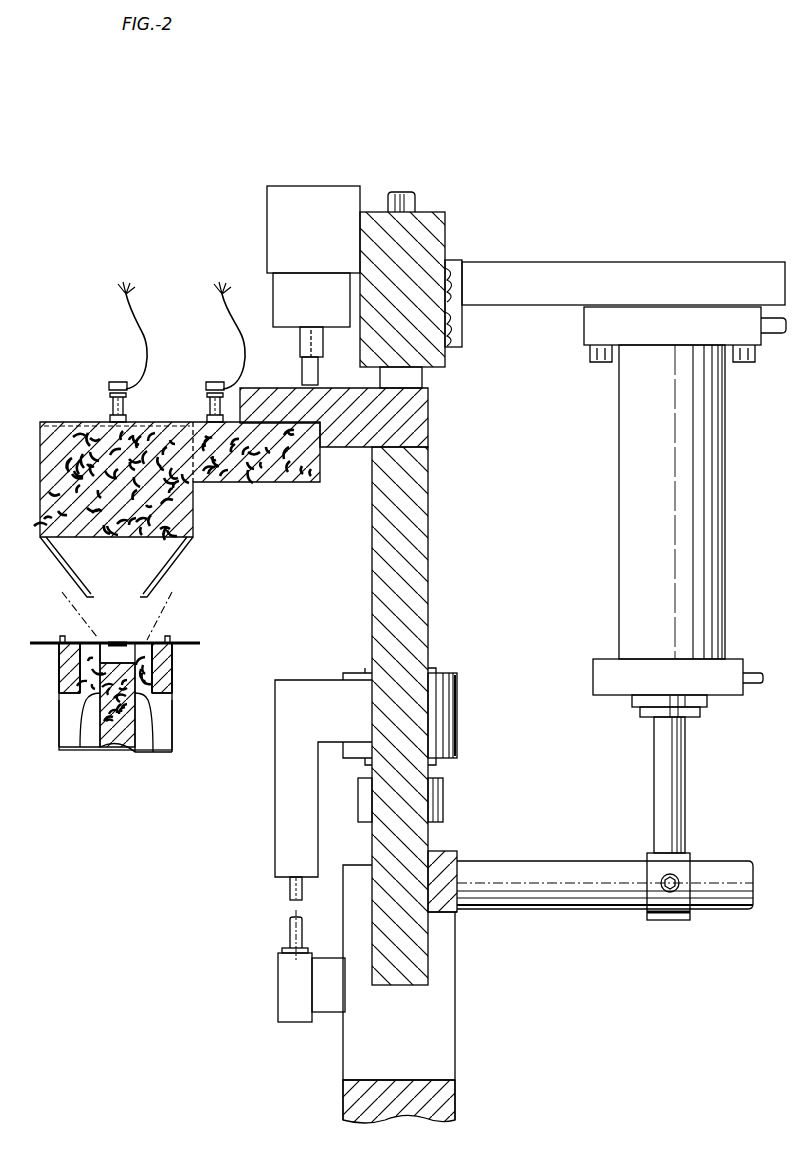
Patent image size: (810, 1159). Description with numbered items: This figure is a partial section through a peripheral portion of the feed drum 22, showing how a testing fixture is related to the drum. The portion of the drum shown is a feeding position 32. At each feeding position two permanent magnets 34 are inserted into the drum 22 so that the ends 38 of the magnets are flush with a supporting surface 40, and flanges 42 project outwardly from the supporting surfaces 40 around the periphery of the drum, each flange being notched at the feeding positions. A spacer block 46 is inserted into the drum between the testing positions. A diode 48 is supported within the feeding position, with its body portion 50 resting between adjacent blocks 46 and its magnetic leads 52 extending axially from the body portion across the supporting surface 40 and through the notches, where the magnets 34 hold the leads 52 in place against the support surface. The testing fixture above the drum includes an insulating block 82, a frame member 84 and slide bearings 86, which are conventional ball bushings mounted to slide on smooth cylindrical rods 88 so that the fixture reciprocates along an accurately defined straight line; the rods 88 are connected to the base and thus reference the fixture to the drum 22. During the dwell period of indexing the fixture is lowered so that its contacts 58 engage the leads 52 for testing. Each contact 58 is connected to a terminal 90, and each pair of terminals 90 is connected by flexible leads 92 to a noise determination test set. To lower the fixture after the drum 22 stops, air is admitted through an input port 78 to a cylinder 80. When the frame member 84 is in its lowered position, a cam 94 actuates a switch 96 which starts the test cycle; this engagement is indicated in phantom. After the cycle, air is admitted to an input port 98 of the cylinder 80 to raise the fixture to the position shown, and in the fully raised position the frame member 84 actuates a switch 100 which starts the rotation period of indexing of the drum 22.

The drum 22 is at (178, 706).
The feeding position 32 is at (180, 632).
The permanent magnets 34 is at (115, 726).
The ends of the magnets 38 is at (72, 639).
The supporting surface 40 is at (64, 660).
The flanges 42 is at (60, 640).
The spacer block 46 is at (131, 639).
The diode 48 is at (116, 633).
The body portion 50 is at (104, 640).
The magnetic leads 52 is at (47, 647).
The contacts 58 is at (78, 592).
The input port 78 is at (773, 333).
The cylinder 80 is at (723, 448).
The insulating block 82 is at (268, 483).
The frame member 84 is at (430, 541).
The slide bearings 86 is at (456, 692).
The cylindrical rods 88 is at (416, 207).
The terminal 90 is at (125, 385).
The flexible leads 92 is at (137, 331).
The cam 94 is at (283, 926).
The switch 96 is at (282, 1013).
The input port 98 is at (763, 678).
The switch 100 is at (268, 208).